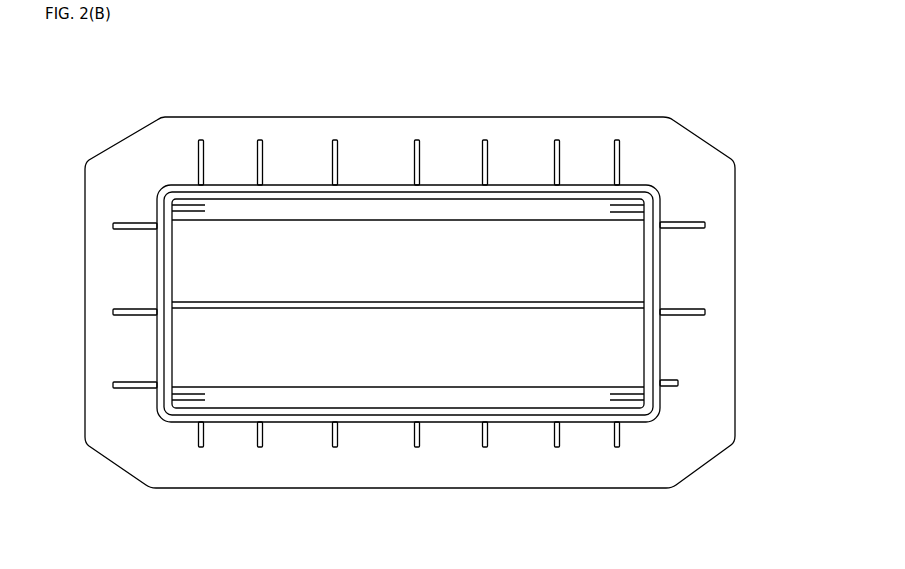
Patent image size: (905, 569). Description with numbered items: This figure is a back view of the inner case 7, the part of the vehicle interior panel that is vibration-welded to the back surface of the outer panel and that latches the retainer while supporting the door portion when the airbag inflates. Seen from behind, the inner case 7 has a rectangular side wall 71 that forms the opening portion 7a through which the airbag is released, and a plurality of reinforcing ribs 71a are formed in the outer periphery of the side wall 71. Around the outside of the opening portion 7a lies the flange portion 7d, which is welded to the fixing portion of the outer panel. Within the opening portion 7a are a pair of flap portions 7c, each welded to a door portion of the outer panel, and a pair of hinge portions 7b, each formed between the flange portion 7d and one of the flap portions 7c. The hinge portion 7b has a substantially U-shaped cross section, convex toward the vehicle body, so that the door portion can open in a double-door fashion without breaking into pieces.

The inner case 7 is at (160, 96).
The opening portion 7a is at (640, 200).
The hinge portion 7b is at (372, 208).
The flap portion 7c is at (455, 258).
The flange portion 7d is at (288, 160).
The side wall 71 is at (367, 423).
The reinforcing ribs 71a is at (487, 140).